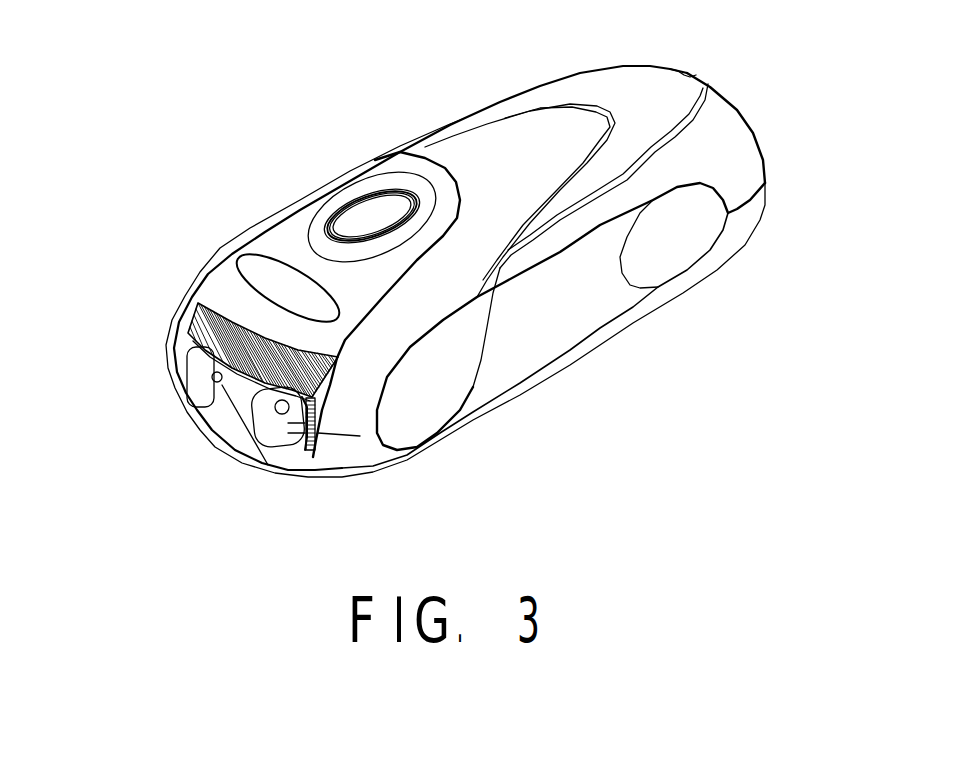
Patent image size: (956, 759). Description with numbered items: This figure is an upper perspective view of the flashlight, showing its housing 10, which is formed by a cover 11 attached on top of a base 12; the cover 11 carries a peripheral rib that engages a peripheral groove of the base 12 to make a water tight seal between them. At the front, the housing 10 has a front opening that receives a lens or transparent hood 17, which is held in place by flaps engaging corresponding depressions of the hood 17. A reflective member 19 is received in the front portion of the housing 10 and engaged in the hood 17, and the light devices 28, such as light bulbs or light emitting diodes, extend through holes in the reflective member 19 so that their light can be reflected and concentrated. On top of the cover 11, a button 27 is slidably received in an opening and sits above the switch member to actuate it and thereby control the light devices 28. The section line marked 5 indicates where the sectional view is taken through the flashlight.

The housing 10 is at (207, 200).
The cover 11 is at (578, 87).
The base 12 is at (635, 317).
The hood 17 is at (182, 373).
The reflective member 19 is at (200, 312).
The button 27 is at (369, 207).
The light devices 28 is at (220, 377).
The section line 5- 5 is at (800, 43).